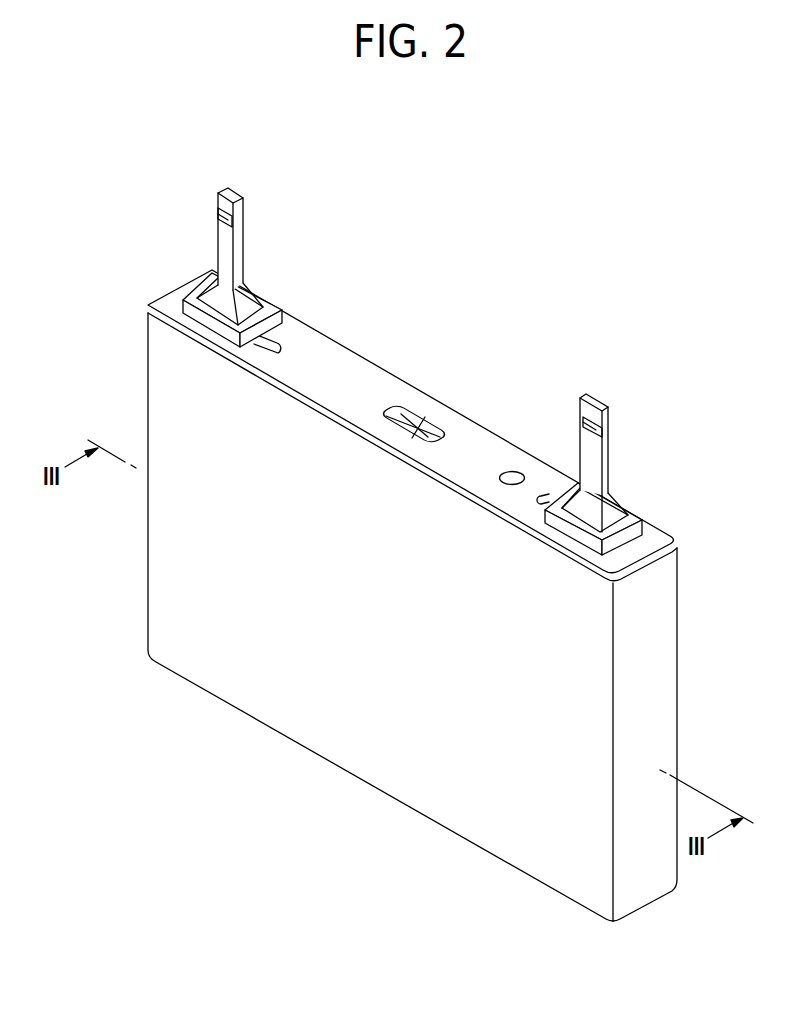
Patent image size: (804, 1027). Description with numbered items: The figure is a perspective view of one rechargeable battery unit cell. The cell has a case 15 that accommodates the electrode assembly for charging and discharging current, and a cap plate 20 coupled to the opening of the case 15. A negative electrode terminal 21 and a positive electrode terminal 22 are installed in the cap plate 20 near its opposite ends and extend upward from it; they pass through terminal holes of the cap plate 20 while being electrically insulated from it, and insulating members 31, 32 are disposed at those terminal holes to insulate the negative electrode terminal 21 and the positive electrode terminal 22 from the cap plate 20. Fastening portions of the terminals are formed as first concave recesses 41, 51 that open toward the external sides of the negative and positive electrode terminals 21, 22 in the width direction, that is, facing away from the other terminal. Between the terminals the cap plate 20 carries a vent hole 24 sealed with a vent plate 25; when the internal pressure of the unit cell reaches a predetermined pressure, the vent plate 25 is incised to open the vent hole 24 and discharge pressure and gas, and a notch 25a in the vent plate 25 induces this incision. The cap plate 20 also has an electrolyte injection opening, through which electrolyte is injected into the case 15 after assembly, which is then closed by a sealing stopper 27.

The case 15 is at (338, 747).
The cap plate 20 is at (350, 385).
The negative electrode terminal 21 is at (228, 248).
The positive electrode terminal 22 is at (593, 452).
The vent hole 24 is at (403, 407).
The vent plate 25 is at (417, 418).
The notch 25a is at (425, 432).
The sealing stopper 27 is at (512, 472).
The insulating member 31 is at (192, 312).
The insulating member 32 is at (625, 537).
The first concave recess 41 is at (225, 213).
The first concave recess 51 is at (605, 430).